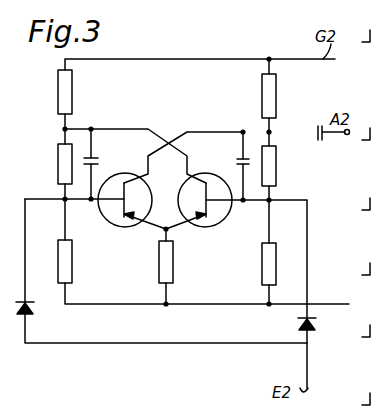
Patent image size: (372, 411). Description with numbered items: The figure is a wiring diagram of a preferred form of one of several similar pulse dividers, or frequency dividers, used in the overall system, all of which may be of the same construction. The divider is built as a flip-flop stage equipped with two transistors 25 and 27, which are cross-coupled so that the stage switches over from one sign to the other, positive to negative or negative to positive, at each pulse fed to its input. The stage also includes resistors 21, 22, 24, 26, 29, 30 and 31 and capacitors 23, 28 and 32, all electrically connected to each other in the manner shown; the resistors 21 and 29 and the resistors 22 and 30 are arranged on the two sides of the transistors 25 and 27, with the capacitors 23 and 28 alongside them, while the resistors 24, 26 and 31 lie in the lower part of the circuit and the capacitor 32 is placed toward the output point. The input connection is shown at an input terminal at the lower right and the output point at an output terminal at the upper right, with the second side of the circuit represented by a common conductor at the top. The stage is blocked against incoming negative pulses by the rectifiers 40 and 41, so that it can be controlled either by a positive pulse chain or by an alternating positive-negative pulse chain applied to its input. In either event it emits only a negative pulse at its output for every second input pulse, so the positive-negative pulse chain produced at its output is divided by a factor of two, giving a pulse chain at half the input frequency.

The resistor 21 is at (80, 89).
The resistor 22 is at (58, 155).
The capacitor 23 is at (92, 160).
The resistor 24 is at (80, 256).
The transistor 25 is at (104, 208).
The resistor 26 is at (172, 264).
The transistor 27 is at (223, 208).
The capacitor 28 is at (237, 160).
The resistor 29 is at (284, 89).
The resistor 30 is at (284, 157).
The resistor 31 is at (284, 256).
The capacitor 32 is at (318, 126).
The rectifier 40 is at (302, 322).
The rectifier 41 is at (29, 310).